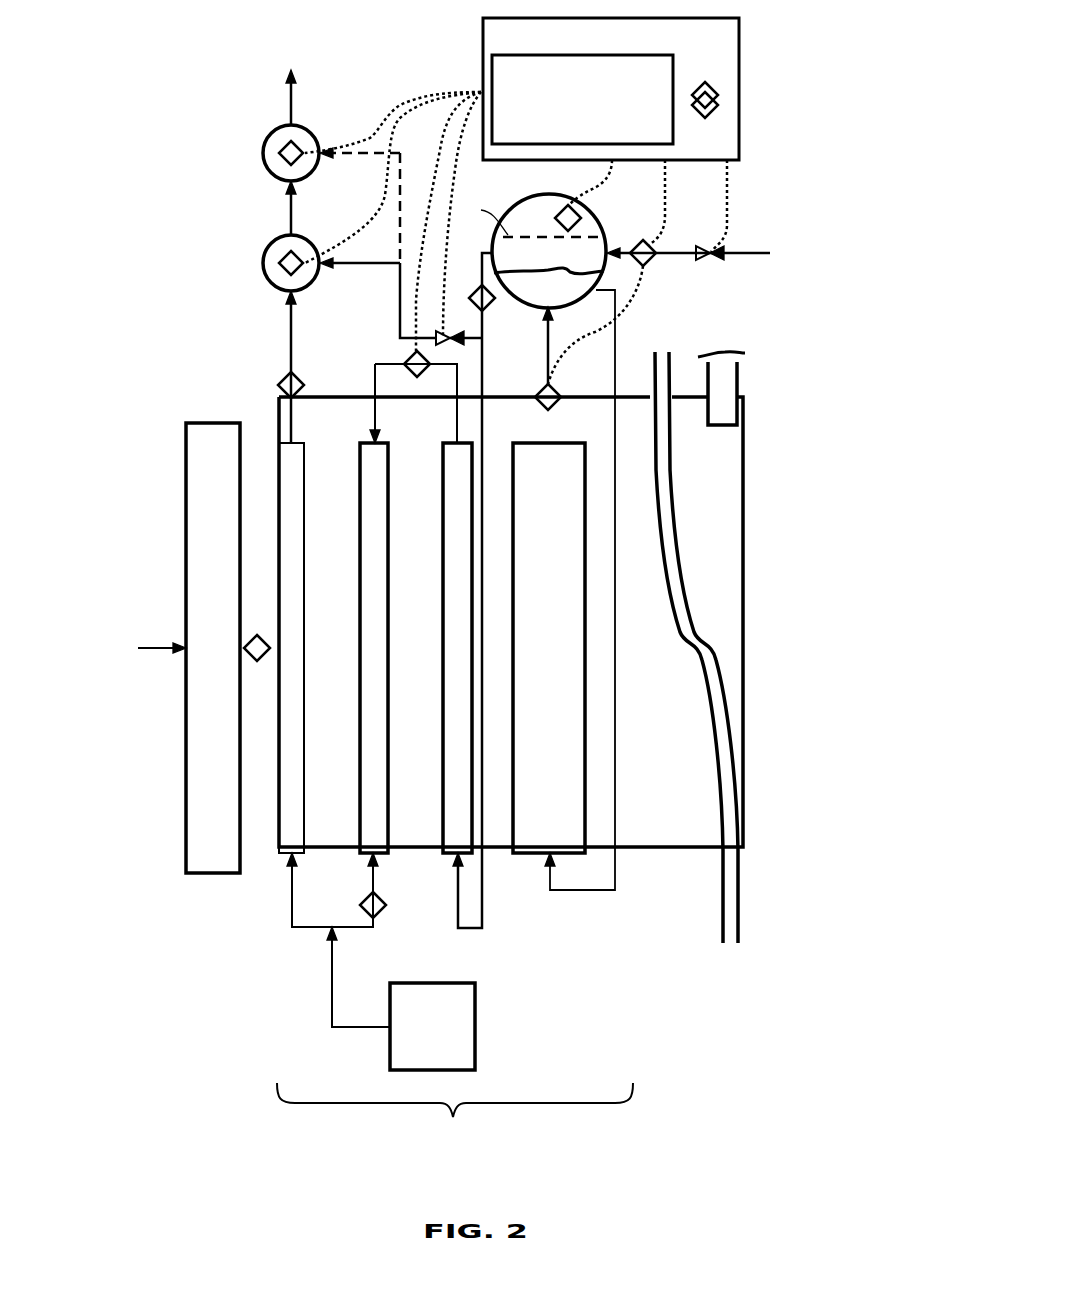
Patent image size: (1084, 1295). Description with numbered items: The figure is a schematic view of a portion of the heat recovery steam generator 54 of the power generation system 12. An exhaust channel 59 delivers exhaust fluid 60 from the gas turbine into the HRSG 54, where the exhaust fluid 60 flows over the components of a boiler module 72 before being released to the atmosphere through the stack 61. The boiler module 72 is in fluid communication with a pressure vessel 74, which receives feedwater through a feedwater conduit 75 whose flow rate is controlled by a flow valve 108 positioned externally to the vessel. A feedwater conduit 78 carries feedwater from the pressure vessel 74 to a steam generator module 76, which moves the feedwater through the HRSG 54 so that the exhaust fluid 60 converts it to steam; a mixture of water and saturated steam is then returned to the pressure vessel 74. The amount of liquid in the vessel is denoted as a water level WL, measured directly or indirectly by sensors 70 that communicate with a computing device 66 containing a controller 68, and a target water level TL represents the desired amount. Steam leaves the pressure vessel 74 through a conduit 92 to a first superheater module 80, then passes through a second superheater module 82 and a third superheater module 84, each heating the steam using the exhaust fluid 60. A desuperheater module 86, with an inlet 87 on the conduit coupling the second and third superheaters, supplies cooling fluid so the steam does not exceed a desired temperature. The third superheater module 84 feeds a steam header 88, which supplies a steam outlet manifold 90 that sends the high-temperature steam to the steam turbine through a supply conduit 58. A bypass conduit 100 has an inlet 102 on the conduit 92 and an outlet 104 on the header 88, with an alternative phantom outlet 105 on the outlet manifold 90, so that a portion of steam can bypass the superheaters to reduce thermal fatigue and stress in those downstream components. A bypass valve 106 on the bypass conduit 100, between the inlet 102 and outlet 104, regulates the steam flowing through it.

The power generation system 12 is at (140, 158).
The heat recovery steam generator 54 is at (680, 870).
The supply conduit 58 is at (290, 94).
The exhaust channel 59 is at (202, 880).
The exhaust fluid 60 is at (172, 650).
The stack 61 is at (738, 378).
The computing device 66 is at (611, 89).
The controller 68 is at (582, 99).
The sensor 70 is at (718, 92).
The boiler module 72 is at (455, 1116).
The pressure vessel 74 is at (596, 218).
The feedwater conduit 75 is at (685, 247).
The steam generator module 76 is at (528, 865).
The feedwater conduit 78 is at (617, 700).
The first superheater module 80 is at (440, 572).
The second superheater module 82 is at (358, 550).
The third superheater module 84 is at (306, 672).
The desuperheater module 86 is at (476, 1013).
The inlet 87 is at (348, 940).
The steam header 88 is at (265, 262).
The steam outlet manifold 90 is at (265, 152).
The conduit 92 is at (484, 384).
The bypass conduit 100 is at (370, 150).
The inlet 102 is at (490, 338).
The outlet 104 is at (326, 285).
The outlet 105 is at (326, 168).
The bypass valve 106 is at (476, 285).
The flow valve 108 is at (708, 262).